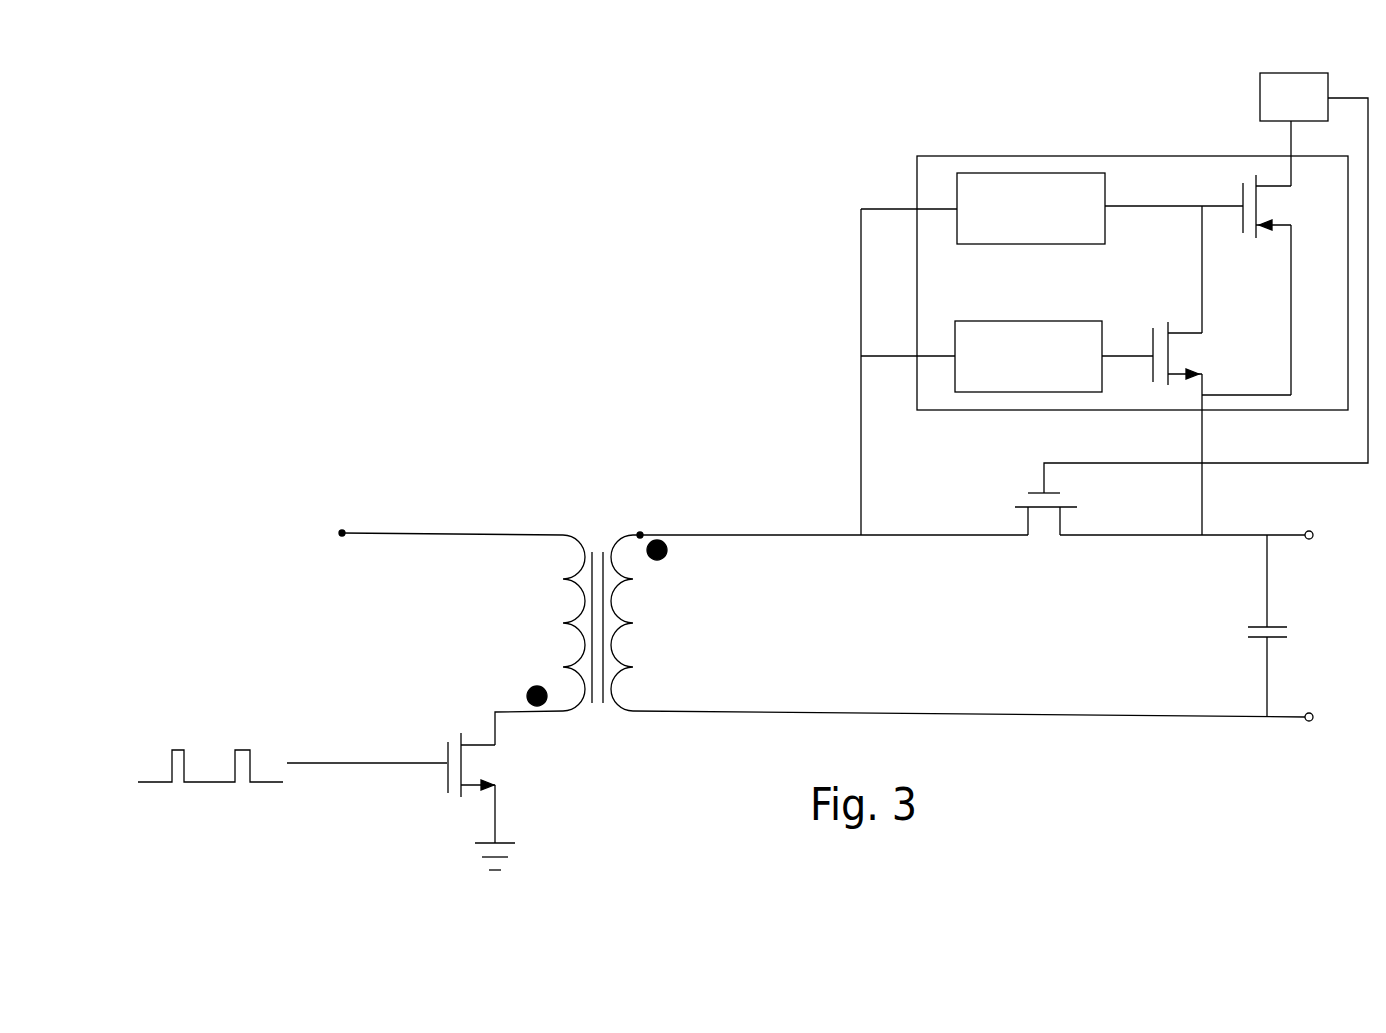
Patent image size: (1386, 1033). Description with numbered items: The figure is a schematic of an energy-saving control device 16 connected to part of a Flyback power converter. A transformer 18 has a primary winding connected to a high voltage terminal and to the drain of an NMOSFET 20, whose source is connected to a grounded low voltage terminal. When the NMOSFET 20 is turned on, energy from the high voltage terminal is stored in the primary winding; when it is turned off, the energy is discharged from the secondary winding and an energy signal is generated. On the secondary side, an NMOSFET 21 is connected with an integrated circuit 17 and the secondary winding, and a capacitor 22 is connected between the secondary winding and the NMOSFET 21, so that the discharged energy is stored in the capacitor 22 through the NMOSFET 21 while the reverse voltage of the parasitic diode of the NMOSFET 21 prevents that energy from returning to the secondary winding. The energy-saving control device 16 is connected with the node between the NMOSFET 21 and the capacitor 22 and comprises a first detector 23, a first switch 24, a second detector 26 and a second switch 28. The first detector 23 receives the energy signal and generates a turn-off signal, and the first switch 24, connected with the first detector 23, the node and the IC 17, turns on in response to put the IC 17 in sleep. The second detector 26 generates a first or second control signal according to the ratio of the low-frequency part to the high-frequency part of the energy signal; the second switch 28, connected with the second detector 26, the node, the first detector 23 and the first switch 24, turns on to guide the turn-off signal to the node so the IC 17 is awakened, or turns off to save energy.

The energy-saving control device 16 is at (917, 288).
The integrated circuit 17 is at (1258, 97).
The transformer 18 is at (573, 535).
The NMOSFET 20 is at (408, 733).
The NMOSFET 21 is at (1015, 507).
The capacitor 22 is at (1280, 640).
The first detector 23 is at (1008, 173).
The first switch 24 is at (1268, 205).
The second detector 26 is at (955, 340).
The second switch 28 is at (1172, 348).